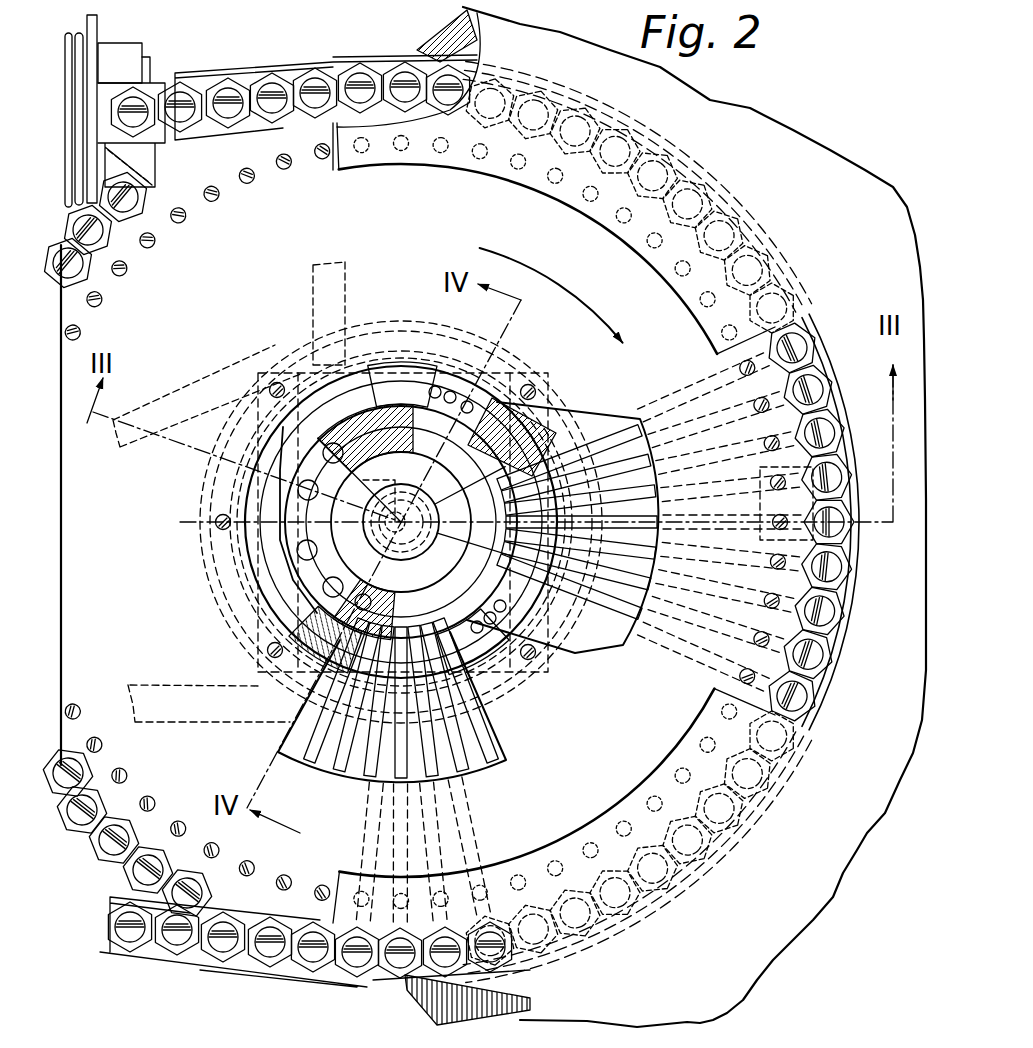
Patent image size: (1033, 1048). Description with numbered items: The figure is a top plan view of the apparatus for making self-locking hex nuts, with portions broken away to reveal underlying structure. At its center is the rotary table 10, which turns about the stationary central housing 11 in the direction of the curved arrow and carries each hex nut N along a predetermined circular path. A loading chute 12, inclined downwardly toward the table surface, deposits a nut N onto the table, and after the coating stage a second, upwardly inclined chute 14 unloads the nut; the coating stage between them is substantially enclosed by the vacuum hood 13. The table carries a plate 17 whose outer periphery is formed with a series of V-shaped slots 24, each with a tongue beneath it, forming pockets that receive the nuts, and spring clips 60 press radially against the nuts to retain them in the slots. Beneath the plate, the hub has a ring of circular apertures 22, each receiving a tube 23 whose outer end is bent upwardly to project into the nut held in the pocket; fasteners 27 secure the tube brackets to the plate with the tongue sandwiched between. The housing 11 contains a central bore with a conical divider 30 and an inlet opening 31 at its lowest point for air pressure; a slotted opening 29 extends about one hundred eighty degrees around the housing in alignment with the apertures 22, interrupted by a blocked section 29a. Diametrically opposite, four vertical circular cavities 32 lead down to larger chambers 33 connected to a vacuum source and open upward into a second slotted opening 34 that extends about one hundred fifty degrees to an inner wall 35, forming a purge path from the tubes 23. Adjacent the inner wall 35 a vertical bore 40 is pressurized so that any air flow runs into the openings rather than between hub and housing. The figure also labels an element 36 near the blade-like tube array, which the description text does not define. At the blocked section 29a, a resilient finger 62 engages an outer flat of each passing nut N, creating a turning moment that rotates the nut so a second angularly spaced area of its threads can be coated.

The table 10 is at (388, 47).
The central housing 11 is at (560, 398).
The loading chute 12 is at (113, 45).
The vacuum hood 13 is at (750, 108).
The second chute 14 is at (158, 963).
The plate 17 is at (630, 712).
The apertures 22 is at (457, 618).
The tube 23 is at (500, 718).
The V-shaped slots 24 is at (90, 797).
The fasteners 27 is at (88, 327).
The slotted opening 29 is at (443, 442).
The blocked section 29a is at (487, 505).
The conical shaped divider 30 is at (401, 522).
The inlet opening 31 is at (401, 522).
The vertical circular cavities 32 is at (401, 505).
The chamber 33 is at (275, 507).
The second slotted opening 34 is at (307, 540).
The inner wall 35 is at (373, 350).
The blade assembly 36 is at (578, 412).
The vertical bore 40 is at (397, 594).
The spring clips 60 is at (337, 58).
The resilient finger 62 is at (853, 527).
The hex nut N is at (240, 80).